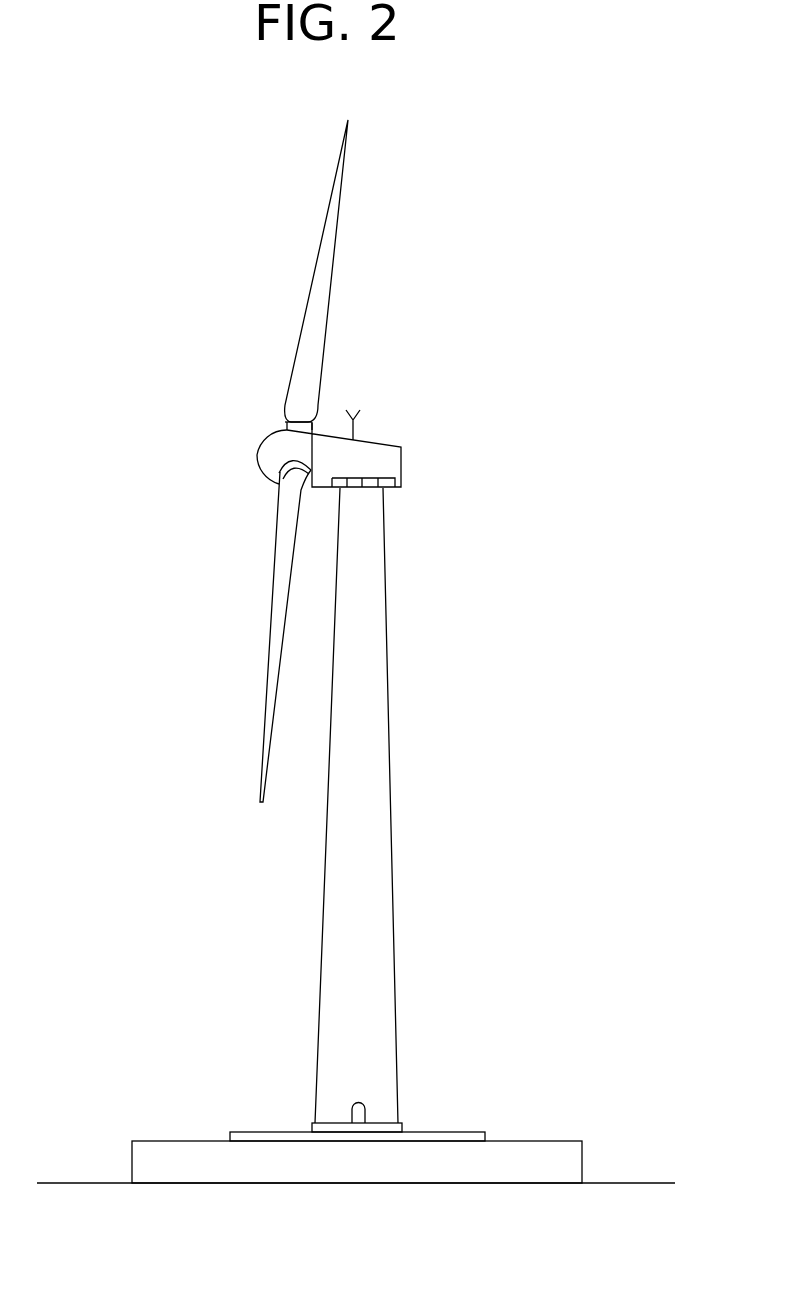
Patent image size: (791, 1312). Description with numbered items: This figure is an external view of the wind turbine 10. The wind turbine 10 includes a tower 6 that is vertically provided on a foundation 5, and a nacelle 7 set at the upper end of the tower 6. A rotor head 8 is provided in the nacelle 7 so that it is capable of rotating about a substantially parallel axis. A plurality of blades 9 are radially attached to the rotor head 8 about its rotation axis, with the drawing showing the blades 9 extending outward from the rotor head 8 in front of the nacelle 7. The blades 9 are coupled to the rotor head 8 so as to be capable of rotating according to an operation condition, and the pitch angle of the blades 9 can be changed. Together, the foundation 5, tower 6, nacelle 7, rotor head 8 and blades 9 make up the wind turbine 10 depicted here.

The wind turbine 10 is at (515, 388).
The foundation 5 is at (545, 1140).
The tower 6 is at (388, 662).
The nacelle 7 is at (373, 437).
The rotor head 8 is at (258, 453).
The blades 9 is at (338, 220).